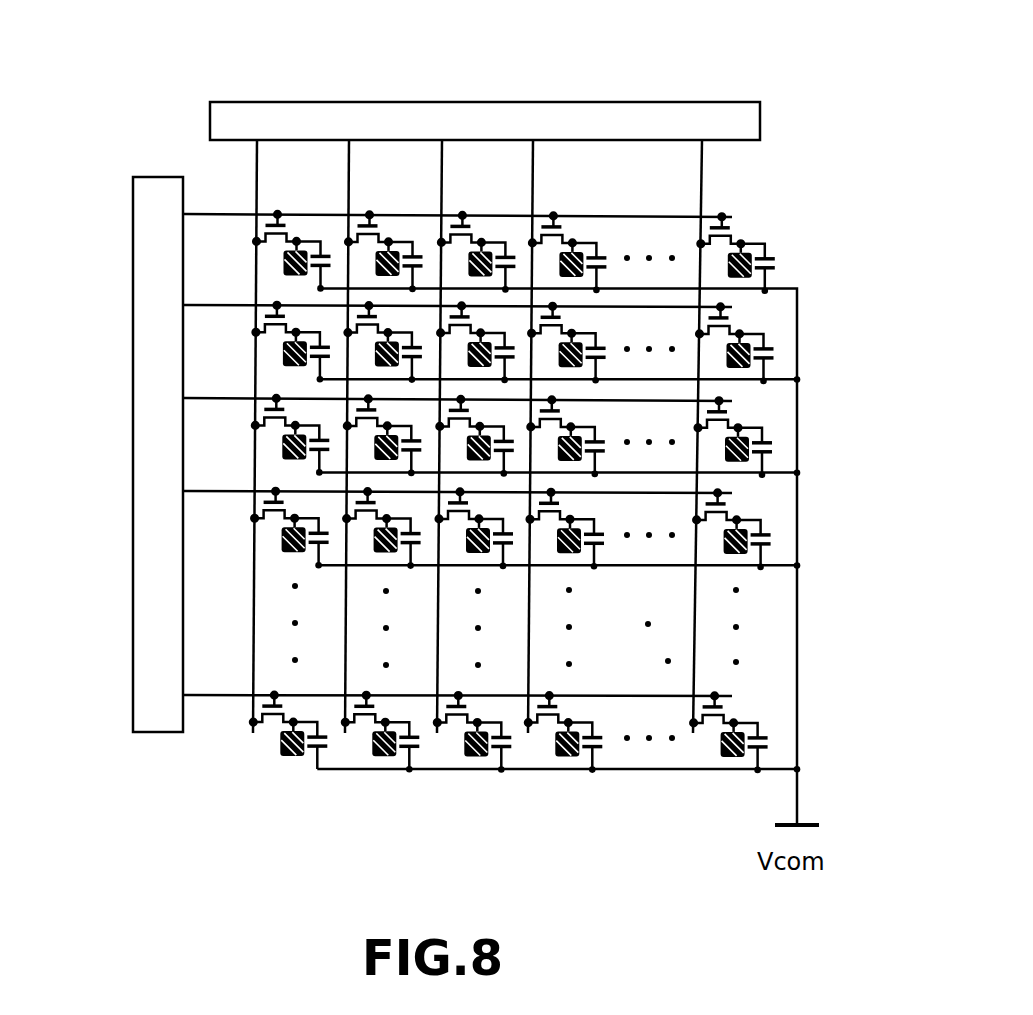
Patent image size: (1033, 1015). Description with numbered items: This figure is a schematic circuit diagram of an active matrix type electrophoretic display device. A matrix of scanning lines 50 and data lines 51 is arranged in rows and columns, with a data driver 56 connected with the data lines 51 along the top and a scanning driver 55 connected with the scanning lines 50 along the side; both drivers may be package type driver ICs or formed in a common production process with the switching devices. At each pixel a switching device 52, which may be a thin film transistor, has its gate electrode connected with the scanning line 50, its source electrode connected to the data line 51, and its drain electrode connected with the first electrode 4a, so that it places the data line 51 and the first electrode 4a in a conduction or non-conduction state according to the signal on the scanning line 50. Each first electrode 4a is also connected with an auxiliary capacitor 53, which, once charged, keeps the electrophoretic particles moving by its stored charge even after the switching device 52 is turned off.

The first electrode 4a is at (785, 265).
The scanning line 50 is at (222, 214).
The data line 51 is at (258, 176).
The switching device 52 is at (732, 228).
The auxiliary capacitor 53 is at (770, 255).
The scanning driver 55 is at (150, 568).
The data driver 56 is at (597, 123).